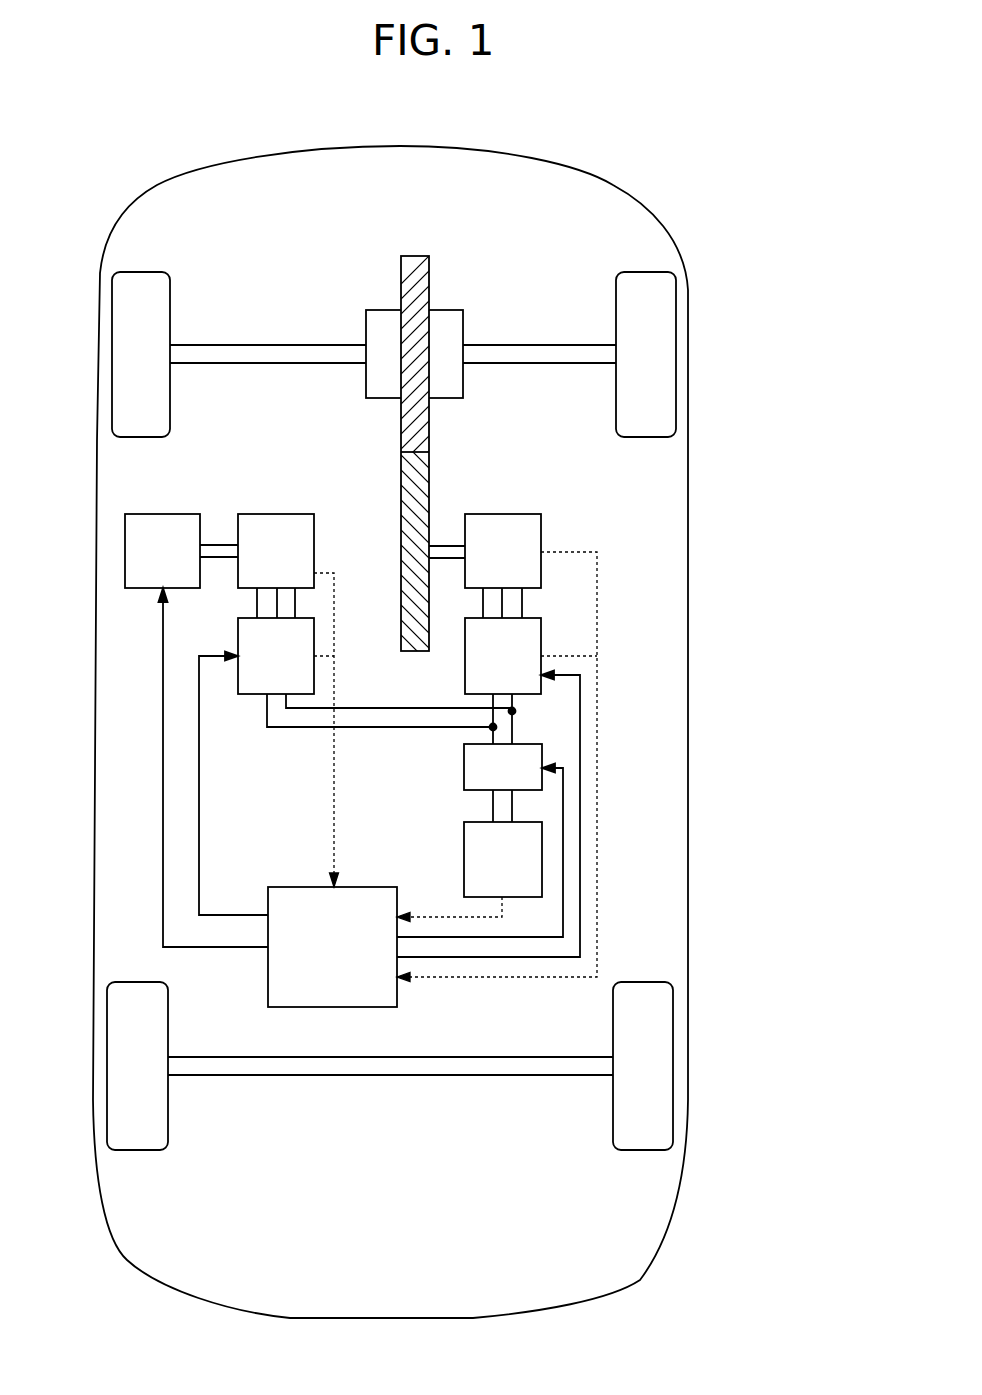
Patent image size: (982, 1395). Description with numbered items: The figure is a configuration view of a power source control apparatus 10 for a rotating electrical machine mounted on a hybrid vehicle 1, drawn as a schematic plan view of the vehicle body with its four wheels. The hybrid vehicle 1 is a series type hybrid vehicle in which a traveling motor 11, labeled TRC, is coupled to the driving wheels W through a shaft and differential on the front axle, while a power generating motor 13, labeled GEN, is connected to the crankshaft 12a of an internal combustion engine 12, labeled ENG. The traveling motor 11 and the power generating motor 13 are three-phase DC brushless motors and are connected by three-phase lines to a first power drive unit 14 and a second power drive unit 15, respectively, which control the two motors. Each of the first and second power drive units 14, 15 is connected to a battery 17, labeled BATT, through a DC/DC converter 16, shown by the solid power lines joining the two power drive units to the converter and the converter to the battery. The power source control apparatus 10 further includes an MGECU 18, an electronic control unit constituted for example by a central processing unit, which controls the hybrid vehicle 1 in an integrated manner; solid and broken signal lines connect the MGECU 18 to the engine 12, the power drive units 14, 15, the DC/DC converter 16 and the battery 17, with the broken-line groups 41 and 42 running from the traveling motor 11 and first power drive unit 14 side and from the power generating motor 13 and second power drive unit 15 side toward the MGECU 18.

The hybrid vehicle 1 is at (747, 203).
The power source control apparatus 10 is at (652, 493).
The driving wheels W is at (143, 272).
The traveling motor 11 is at (535, 514).
The internal combustion engine 12 is at (155, 514).
The crankshaft 12a is at (215, 541).
The power generating motor 13 is at (305, 514).
The first power drive unit 14 is at (541, 635).
The second power drive unit 15 is at (245, 695).
The DC/DC converter 16 is at (464, 770).
The battery 17 is at (464, 862).
The MGECU 18 is at (283, 887).
The first control signal lines 41 is at (562, 571).
The second control signal lines 42 is at (313, 603).